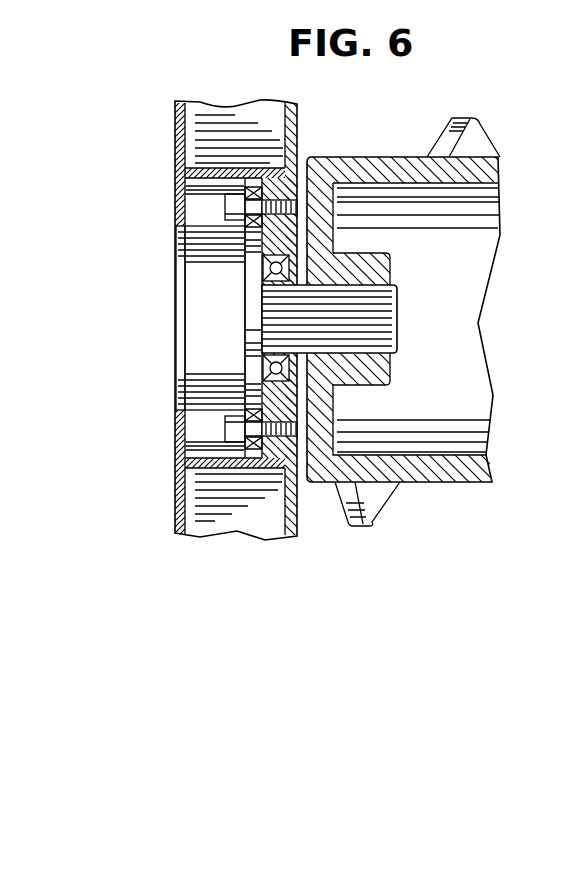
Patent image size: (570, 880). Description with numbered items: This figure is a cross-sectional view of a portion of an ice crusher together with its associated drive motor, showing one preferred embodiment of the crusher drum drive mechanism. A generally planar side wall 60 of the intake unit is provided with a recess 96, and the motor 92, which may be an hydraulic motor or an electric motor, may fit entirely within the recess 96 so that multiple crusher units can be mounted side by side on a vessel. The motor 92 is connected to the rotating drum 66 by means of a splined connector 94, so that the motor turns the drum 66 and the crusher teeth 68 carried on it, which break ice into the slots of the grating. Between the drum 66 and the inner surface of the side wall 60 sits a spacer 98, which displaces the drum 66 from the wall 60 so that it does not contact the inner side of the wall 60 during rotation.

The side wall 60 is at (180, 135).
The drum 66 is at (465, 478).
The crusher teeth 68 is at (458, 118).
The motor 92 is at (190, 316).
The splined connector 94 is at (398, 318).
The recess 96 is at (185, 203).
The spacer 98 is at (292, 266).